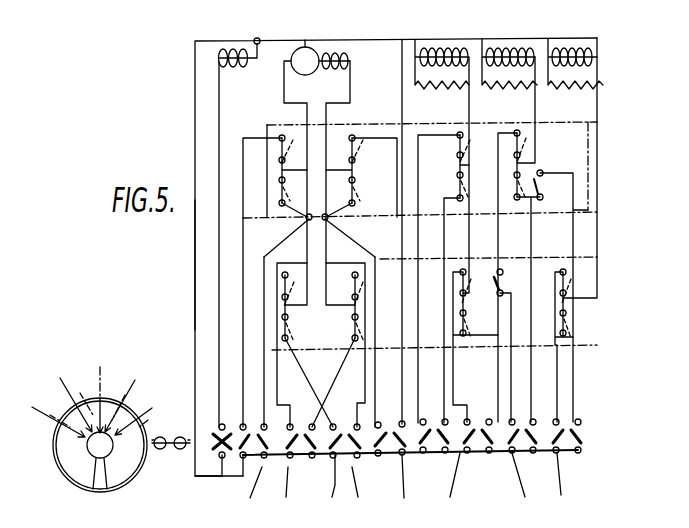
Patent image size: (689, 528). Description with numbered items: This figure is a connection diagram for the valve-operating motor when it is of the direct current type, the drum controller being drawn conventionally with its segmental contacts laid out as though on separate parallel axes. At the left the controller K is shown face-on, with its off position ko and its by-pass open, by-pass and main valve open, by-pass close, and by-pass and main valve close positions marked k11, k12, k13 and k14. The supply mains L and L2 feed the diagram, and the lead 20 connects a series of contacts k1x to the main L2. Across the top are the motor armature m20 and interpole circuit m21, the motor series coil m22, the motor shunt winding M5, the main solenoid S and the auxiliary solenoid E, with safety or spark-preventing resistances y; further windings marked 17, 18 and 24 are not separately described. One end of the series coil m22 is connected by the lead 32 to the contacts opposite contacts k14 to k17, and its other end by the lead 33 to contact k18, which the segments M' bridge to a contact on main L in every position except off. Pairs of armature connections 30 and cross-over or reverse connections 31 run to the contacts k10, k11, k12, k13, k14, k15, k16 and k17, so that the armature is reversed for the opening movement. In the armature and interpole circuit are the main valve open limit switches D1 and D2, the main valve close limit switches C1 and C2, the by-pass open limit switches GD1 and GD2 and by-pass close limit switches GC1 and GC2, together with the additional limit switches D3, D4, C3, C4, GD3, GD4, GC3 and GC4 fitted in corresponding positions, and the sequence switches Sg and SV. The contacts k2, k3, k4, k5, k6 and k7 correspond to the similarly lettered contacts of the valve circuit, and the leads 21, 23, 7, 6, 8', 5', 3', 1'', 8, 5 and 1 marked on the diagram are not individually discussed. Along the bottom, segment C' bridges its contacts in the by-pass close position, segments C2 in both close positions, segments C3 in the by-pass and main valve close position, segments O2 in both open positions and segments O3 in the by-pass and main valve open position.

The motor armature m20 is at (307, 49).
The interpole circuit m21 is at (350, 61).
The motor series coil m22 is at (238, 70).
The relay coil 17 is at (452, 47).
The relay lead 18 is at (470, 106).
The motor shunt winding M5 is at (453, 54).
The relay coil 24 is at (509, 90).
The main solenoid S is at (520, 47).
The auxiliary solenoid E is at (575, 160).
The safety or spark preventing resistance y is at (507, 105).
The conductor 21 is at (536, 106).
The conductor 23 is at (598, 233).
The additional main valve open limit switch D3 is at (280, 157).
The segments C3 is at (280, 193).
The additional main valve open limit switch D4 is at (355, 157).
The additional main valve close limit switch C4 is at (356, 181).
The main valve open limit switch D2 is at (460, 150).
The segments C2 is at (458, 182).
The main valve close limit switch C1 is at (515, 183).
The main valve open limit switch D1 is at (524, 144).
The sequence switch SV is at (543, 192).
The armature connections 30 is at (243, 230).
The cross-over or reverse connections 31 is at (336, 368).
The conductor 7 is at (420, 246).
The conductor 6 is at (443, 313).
The conductor 8' is at (505, 242).
The conductor 5' is at (563, 242).
The lead 32 is at (194, 267).
The lead 33 is at (218, 322).
The additional by-pass open limit switch GD3 is at (289, 273).
The additional by-pass open limit switch GD4 is at (353, 273).
The additional by-pass close limit switch GC3 is at (288, 317).
The additional by-pass close limit switch GC4 is at (352, 331).
The by-pass open limit switch GD2 is at (467, 292).
The by-pass close limit switch GC2 is at (466, 315).
The sequence switch Sg is at (508, 271).
The by-pass open limit switch GD1 is at (566, 281).
The by-pass close limit switch GC1 is at (567, 328).
The conductor 3' is at (462, 376).
The conductor 1'' is at (492, 382).
The conductor 8 is at (508, 380).
The conductor 5 is at (538, 378).
The conductor 1 is at (583, 370).
The controller K is at (105, 448).
The cam position ko is at (109, 398).
The segments M' is at (182, 456).
The supply main L is at (222, 490).
The supply main L2 is at (333, 483).
The contact k18 is at (217, 443).
The contact k17 is at (239, 443).
The contact k16 is at (259, 433).
The contact k15 is at (284, 441).
The contact k14 is at (154, 413).
The contact k13 is at (249, 418).
The contact k12 is at (195, 425).
The contact k11 is at (224, 412).
The contact k10 is at (395, 247).
The contact k6 is at (417, 429).
The contact k4 is at (438, 429).
The contact k3 is at (503, 429).
The contact k2 is at (538, 429).
The contact k7 is at (521, 429).
The contact k5 is at (564, 428).
The contacts k1x is at (593, 463).
The segment C' is at (600, 433).
The lead 20 is at (466, 455).
The segments O3 is at (393, 483).
The segments O2 is at (430, 482).